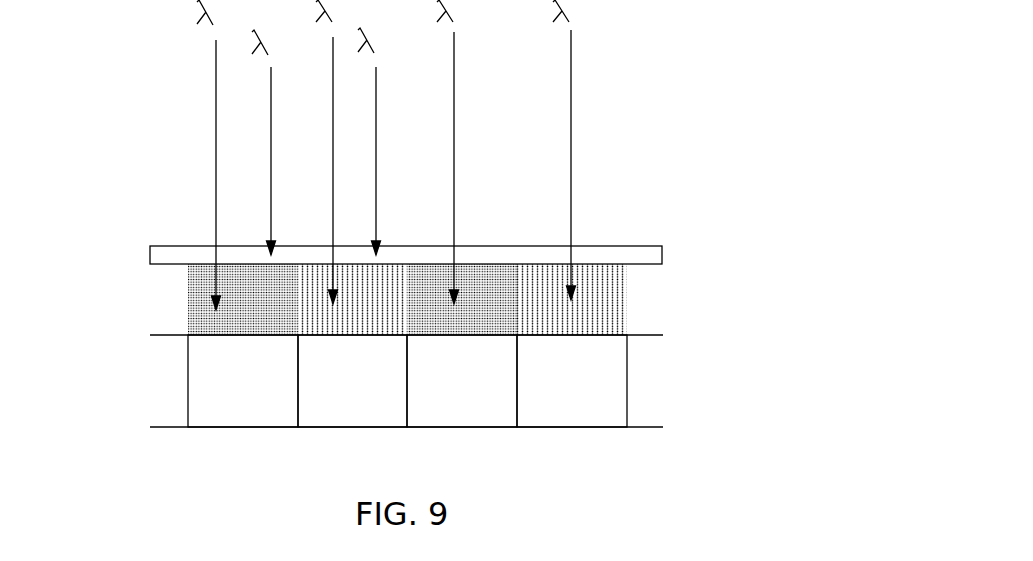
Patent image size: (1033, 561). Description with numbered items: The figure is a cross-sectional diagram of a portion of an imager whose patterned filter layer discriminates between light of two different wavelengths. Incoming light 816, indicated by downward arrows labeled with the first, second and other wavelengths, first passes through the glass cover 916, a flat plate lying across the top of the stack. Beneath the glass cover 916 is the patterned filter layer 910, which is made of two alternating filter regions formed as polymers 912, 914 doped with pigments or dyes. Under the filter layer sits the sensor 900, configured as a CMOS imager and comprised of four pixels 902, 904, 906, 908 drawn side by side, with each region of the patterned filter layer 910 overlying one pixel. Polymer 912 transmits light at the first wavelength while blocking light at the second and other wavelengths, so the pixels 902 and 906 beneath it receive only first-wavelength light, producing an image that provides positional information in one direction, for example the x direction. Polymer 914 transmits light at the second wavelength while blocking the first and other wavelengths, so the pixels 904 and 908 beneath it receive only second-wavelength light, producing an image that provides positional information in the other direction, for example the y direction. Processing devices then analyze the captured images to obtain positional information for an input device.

The incident light of wavelengths lambda 1, lambda 2, lambda n 816 is at (615, 118).
The sensor 900 is at (342, 381).
The pixel 902 is at (243, 381).
The pixel 904 is at (352, 381).
The pixel 906 is at (462, 381).
The pixel 908 is at (572, 381).
The patterned filter layer 910 is at (410, 299).
The polymer 912 is at (494, 317).
The polymer 914 is at (614, 281).
The glass cover 916 is at (138, 236).